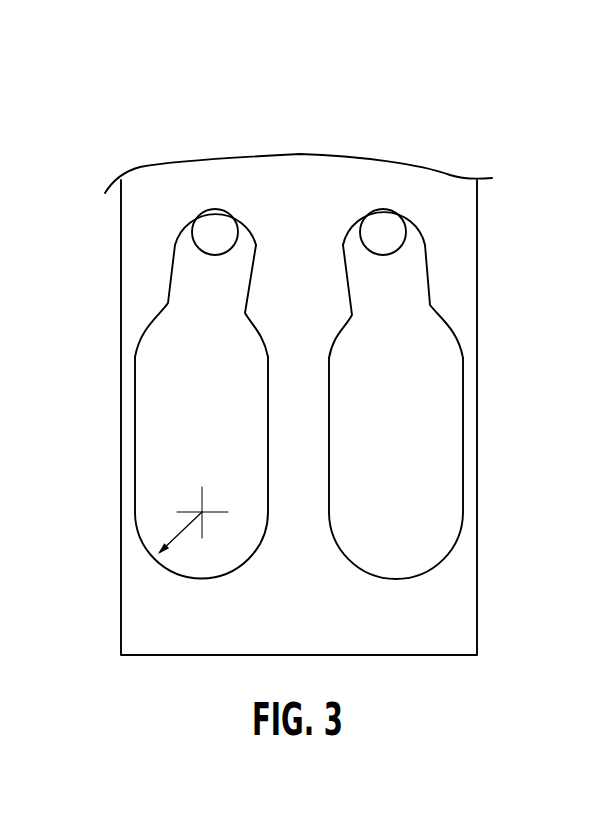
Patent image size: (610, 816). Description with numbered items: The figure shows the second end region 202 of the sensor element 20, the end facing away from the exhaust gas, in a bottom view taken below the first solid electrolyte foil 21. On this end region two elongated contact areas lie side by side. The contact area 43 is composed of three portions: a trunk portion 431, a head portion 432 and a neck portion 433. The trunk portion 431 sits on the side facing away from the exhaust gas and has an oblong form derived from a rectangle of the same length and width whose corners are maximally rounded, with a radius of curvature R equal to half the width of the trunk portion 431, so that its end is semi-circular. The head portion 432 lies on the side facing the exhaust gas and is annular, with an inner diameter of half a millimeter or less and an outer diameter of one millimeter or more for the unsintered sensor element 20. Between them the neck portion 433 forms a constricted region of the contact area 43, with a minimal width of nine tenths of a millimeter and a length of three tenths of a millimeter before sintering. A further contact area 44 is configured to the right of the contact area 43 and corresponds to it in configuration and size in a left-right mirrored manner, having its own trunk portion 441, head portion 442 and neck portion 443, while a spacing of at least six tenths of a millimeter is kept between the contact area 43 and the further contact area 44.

The sensor element 20 is at (311, 362).
The first solid electrolyte foil 21 is at (311, 362).
The second end region 202 is at (389, 158).
The contact area 43 is at (152, 402).
The trunk portion 431 is at (155, 480).
The head portion 432 is at (183, 225).
The neck portion 433 is at (197, 285).
The further contact area 44 is at (442, 398).
The trunk portion of further contact area 441 is at (447, 477).
The head portion of further contact area 442 is at (415, 225).
The neck portion of further contact area 443 is at (405, 268).